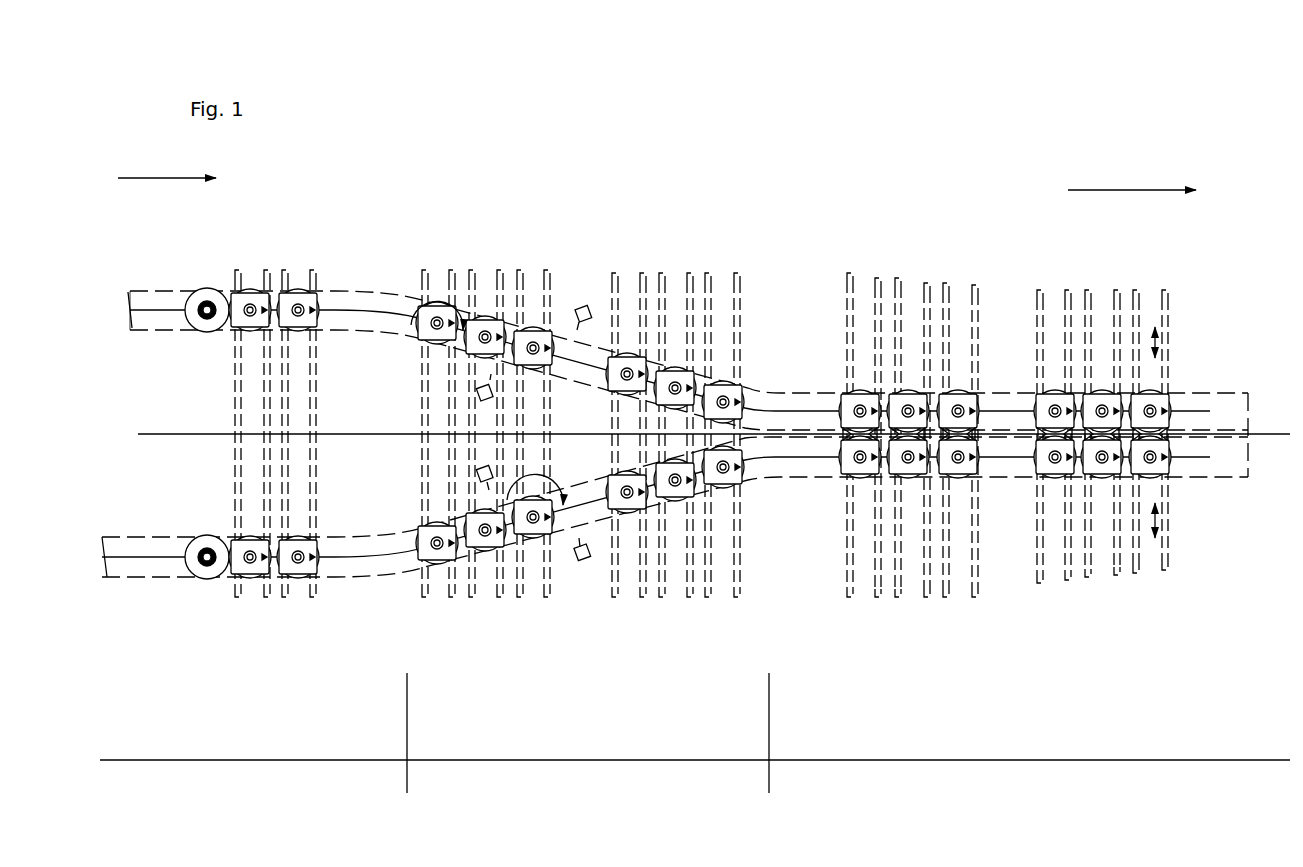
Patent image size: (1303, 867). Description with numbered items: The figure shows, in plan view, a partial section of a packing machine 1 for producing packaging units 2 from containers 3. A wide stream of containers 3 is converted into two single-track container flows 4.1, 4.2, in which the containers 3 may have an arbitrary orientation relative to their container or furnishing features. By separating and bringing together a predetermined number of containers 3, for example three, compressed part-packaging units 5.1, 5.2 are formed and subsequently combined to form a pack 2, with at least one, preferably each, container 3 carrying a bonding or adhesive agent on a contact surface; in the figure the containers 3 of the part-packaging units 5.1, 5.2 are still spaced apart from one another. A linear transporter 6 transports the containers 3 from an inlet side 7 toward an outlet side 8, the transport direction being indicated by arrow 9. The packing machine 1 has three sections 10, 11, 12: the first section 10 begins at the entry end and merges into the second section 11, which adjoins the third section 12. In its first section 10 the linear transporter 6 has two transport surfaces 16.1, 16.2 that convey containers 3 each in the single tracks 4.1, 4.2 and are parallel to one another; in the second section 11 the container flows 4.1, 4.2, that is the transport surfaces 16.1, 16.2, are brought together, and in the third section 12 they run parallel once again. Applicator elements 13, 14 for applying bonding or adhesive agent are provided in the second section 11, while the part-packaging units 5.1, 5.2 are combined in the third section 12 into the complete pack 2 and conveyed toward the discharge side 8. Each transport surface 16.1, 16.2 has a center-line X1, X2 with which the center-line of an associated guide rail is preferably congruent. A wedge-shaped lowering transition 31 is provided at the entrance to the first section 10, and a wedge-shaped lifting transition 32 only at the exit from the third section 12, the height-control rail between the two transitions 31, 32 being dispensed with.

The packing machine 1 is at (729, 153).
The packaging unit 2 is at (1170, 377).
The container 3 is at (203, 568).
The single-track container flow 4.1 is at (686, 336).
The single-track container flow 4.2 is at (675, 507).
The part-packaging unit 5.1 is at (700, 358).
The part-packaging unit 5.2 is at (700, 520).
The linear transporter 6 is at (298, 433).
The inlet side 7 is at (131, 271).
The outlet side 8 is at (1233, 328).
The arrow 9 is at (657, 171).
The first section 10 is at (253, 733).
The second section 11 is at (588, 533).
The third section 12 is at (1029, 516).
The applicator element 13 is at (482, 372).
The applicator element 14 is at (580, 298).
The transport surface 16.1 is at (171, 330).
The transport surface 16.2 is at (171, 577).
The wedge-shaped lowering transition 31 is at (225, 648).
The wedge-shaped lifting transition 32 is at (1131, 624).
The center-line of transport surface X1 is at (366, 299).
The center-line of transport surface X2 is at (342, 556).